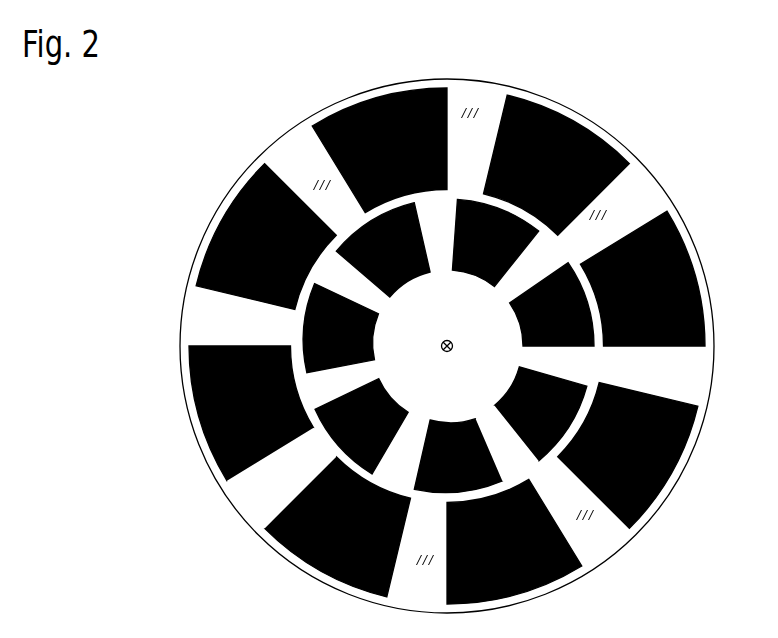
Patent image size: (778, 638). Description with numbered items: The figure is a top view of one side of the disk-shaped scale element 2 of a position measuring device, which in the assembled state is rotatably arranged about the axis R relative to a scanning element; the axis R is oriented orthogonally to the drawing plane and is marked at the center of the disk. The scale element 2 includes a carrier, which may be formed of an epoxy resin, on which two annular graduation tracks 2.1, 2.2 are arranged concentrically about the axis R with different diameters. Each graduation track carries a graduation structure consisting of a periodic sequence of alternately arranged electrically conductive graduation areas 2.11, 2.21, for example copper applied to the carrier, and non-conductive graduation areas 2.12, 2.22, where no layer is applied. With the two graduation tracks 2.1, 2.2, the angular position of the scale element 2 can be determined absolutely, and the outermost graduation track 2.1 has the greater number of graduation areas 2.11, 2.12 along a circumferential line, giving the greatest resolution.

The scale element 2 is at (262, 152).
The graduation track 2.1 is at (204, 334).
The electrically conductive graduation area 2.11 is at (202, 419).
The non-conductive graduation area 2.12 is at (252, 501).
The graduation track 2.2 is at (366, 289).
The electrically conductive graduation area 2.21 is at (395, 399).
The non-conductive graduation area 2.22 is at (498, 432).
The axis R is at (453, 346).